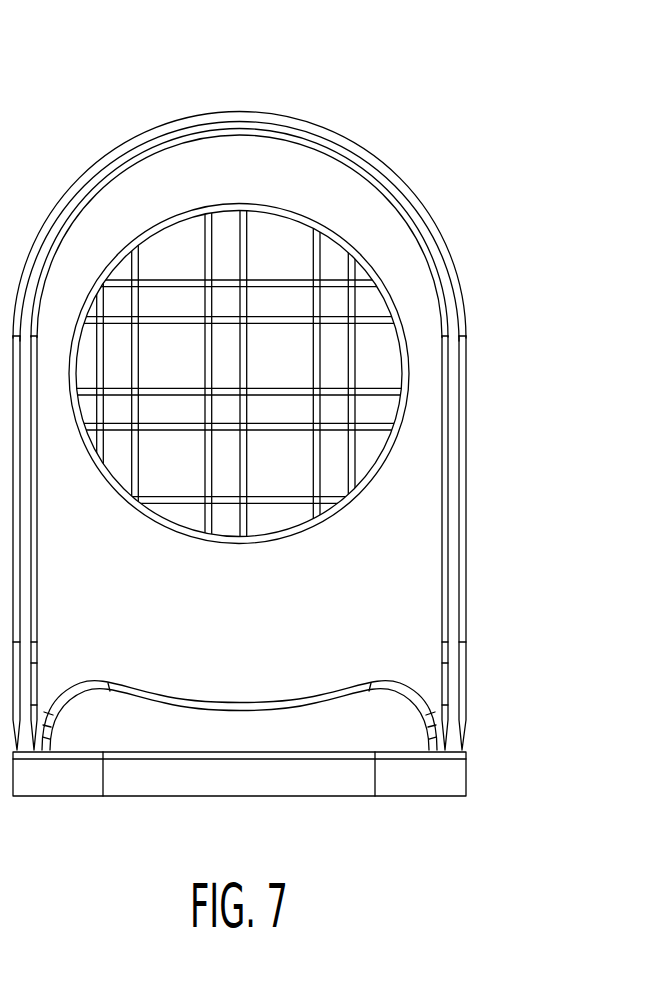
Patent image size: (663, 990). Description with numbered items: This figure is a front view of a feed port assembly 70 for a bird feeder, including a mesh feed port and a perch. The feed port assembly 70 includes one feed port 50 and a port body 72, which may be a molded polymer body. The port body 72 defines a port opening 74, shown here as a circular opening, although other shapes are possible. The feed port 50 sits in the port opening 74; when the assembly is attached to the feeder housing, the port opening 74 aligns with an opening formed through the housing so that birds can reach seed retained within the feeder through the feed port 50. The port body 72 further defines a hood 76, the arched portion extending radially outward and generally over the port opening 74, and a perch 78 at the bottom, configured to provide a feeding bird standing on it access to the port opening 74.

The feed port assembly 70 is at (462, 96).
The port body 72 is at (408, 593).
The port opening 74 is at (385, 465).
The hood 76 is at (236, 115).
The perch 78 is at (450, 778).
The feed port 50 is at (383, 362).